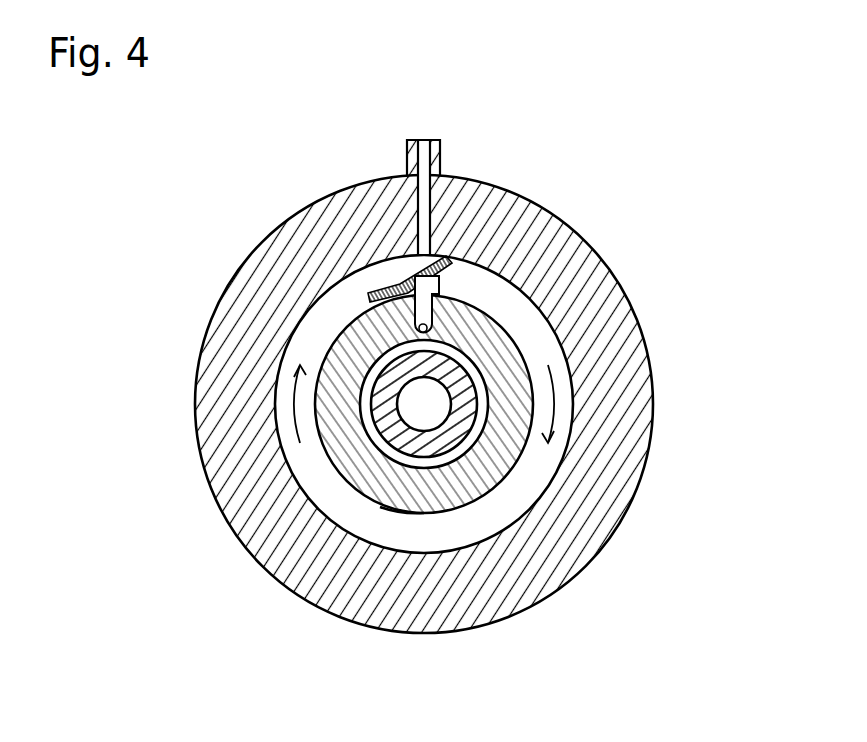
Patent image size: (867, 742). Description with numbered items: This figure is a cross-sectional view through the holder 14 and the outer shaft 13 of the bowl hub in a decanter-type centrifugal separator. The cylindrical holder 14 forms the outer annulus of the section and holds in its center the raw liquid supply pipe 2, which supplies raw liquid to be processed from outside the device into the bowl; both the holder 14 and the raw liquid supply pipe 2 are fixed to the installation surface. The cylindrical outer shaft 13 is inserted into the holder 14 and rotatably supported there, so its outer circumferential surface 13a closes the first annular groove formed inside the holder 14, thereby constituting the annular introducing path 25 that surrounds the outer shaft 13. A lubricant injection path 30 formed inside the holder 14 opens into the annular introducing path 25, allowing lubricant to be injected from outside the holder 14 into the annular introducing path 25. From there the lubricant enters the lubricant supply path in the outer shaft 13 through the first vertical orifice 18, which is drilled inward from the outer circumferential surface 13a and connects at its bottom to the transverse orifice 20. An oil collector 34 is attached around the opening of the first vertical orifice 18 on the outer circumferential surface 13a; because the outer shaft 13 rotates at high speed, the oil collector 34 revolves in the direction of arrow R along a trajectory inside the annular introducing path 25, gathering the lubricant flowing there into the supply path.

The raw liquid supply pipe 2 is at (388, 432).
The outer shaft 13 is at (430, 495).
The outer circumferential surface 13a is at (400, 513).
The holder 14 is at (653, 404).
The first vertical orifice 18 is at (427, 306).
The transverse orifice 20 is at (419, 330).
The annular introducing path 25 is at (528, 480).
The lubricant injection path 30 is at (423, 167).
The oil collector 34 is at (393, 283).